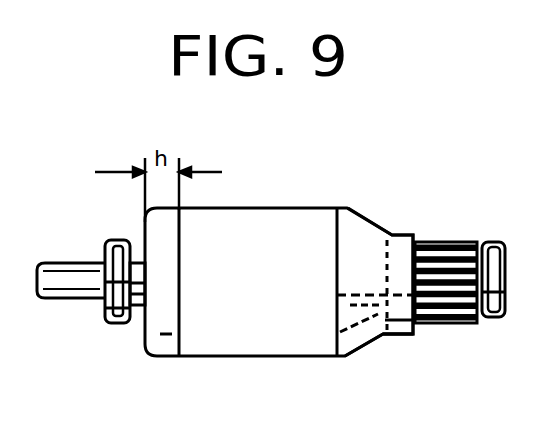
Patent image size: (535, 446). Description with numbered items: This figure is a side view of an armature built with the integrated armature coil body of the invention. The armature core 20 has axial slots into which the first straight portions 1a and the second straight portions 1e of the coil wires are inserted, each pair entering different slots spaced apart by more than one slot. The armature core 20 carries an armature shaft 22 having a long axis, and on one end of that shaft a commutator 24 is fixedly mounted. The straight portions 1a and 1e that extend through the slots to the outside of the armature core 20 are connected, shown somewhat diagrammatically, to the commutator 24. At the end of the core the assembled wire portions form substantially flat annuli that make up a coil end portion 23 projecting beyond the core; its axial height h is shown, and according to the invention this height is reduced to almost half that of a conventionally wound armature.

The armature core 20 is at (312, 233).
The armature shaft 22 is at (138, 308).
The coil end portion 23 is at (168, 235).
The commutator 24 is at (450, 242).
The second straight portion 1e is at (394, 296).
The first straight portion 1a is at (388, 336).